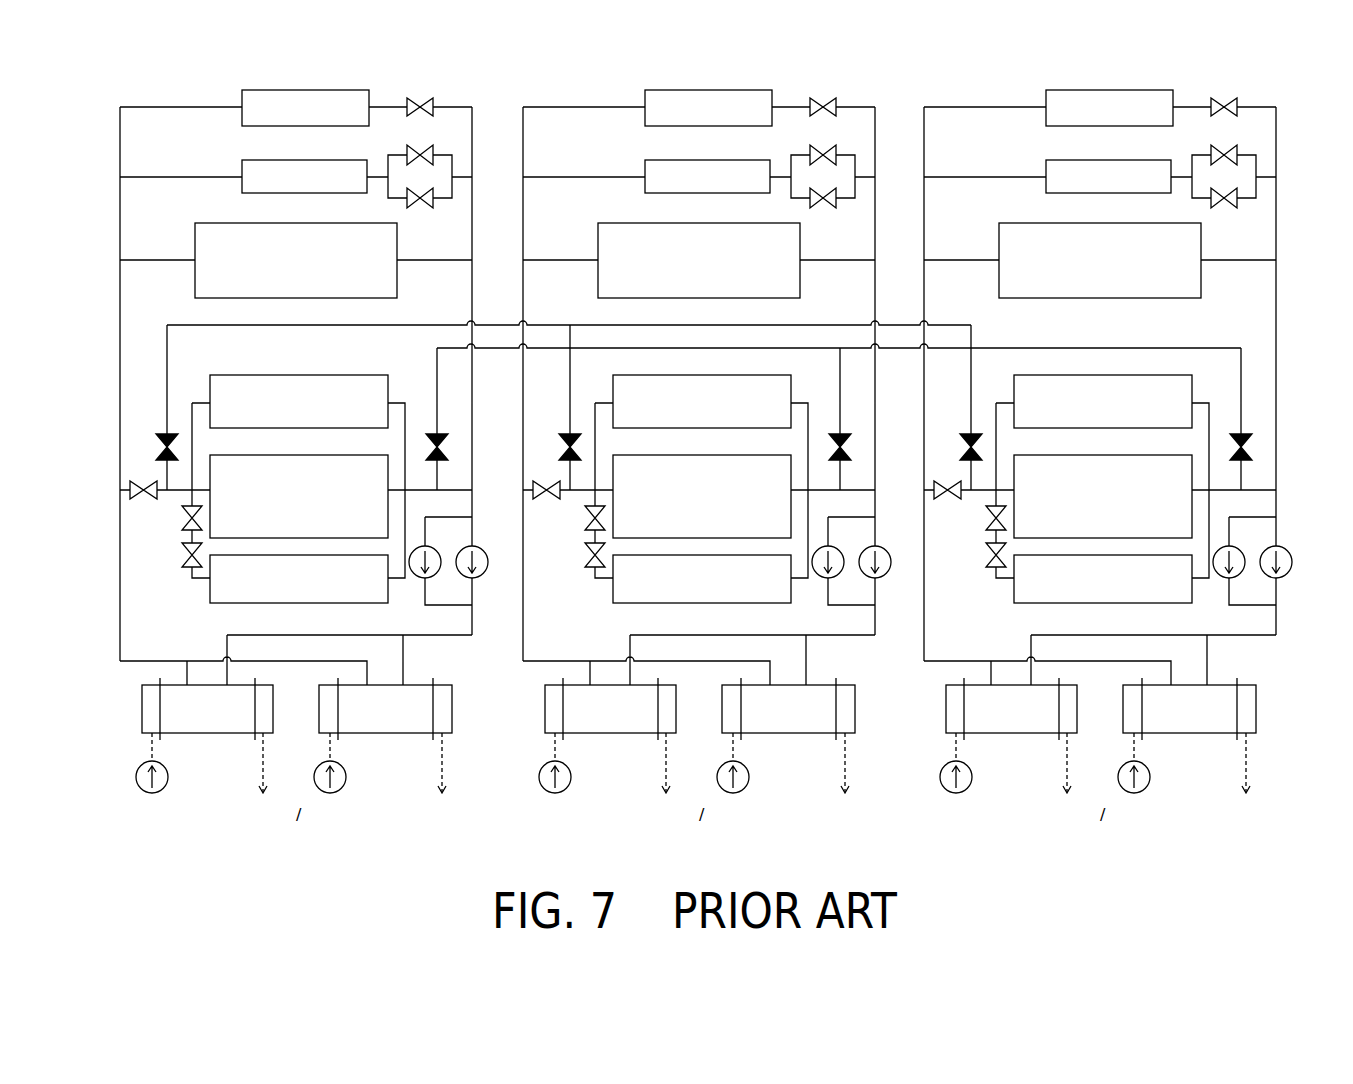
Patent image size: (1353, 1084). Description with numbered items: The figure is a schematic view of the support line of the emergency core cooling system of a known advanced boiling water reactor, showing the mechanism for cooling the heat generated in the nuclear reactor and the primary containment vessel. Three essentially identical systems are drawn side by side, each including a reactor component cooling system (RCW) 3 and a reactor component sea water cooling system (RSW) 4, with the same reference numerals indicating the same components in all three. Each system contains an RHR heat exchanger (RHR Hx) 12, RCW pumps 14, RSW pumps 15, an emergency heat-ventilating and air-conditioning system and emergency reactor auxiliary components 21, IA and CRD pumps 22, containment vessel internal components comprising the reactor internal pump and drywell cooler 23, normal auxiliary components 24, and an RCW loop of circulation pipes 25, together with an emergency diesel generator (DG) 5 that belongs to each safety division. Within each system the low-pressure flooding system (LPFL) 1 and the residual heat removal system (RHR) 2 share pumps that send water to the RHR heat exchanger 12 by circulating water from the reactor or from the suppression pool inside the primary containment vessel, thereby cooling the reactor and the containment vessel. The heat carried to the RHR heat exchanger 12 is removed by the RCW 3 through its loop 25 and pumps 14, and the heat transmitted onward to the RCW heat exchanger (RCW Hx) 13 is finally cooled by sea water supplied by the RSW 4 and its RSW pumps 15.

The low-pressure flooding system (LPFL) 1 is at (111, 477).
The residual heat removal system (RHR) 2 is at (378, 79).
The reactor component cooling system (RCW) 3 is at (238, 832).
The reactor component sea water cooling system (RSW) 4 is at (338, 832).
The emergency diesel generator (DG) 5 is at (242, 167).
The RHR heat exchanger (RHR Hx) 12 is at (242, 100).
The RCW heat exchanger (RCW Hx) 13 is at (142, 708).
The RCW pumps 14 is at (483, 547).
The RSW pumps 15 is at (136, 778).
The emergency HVAC and emergency reactor auxiliary components 21 is at (209, 226).
The IA and CRD pumps 22 is at (250, 375).
The containment vessel internal components (RIP and DWC) 23 is at (250, 455).
The normal auxiliary components 24 is at (250, 603).
The RCW loop (circulation pipes) 25 is at (120, 601).